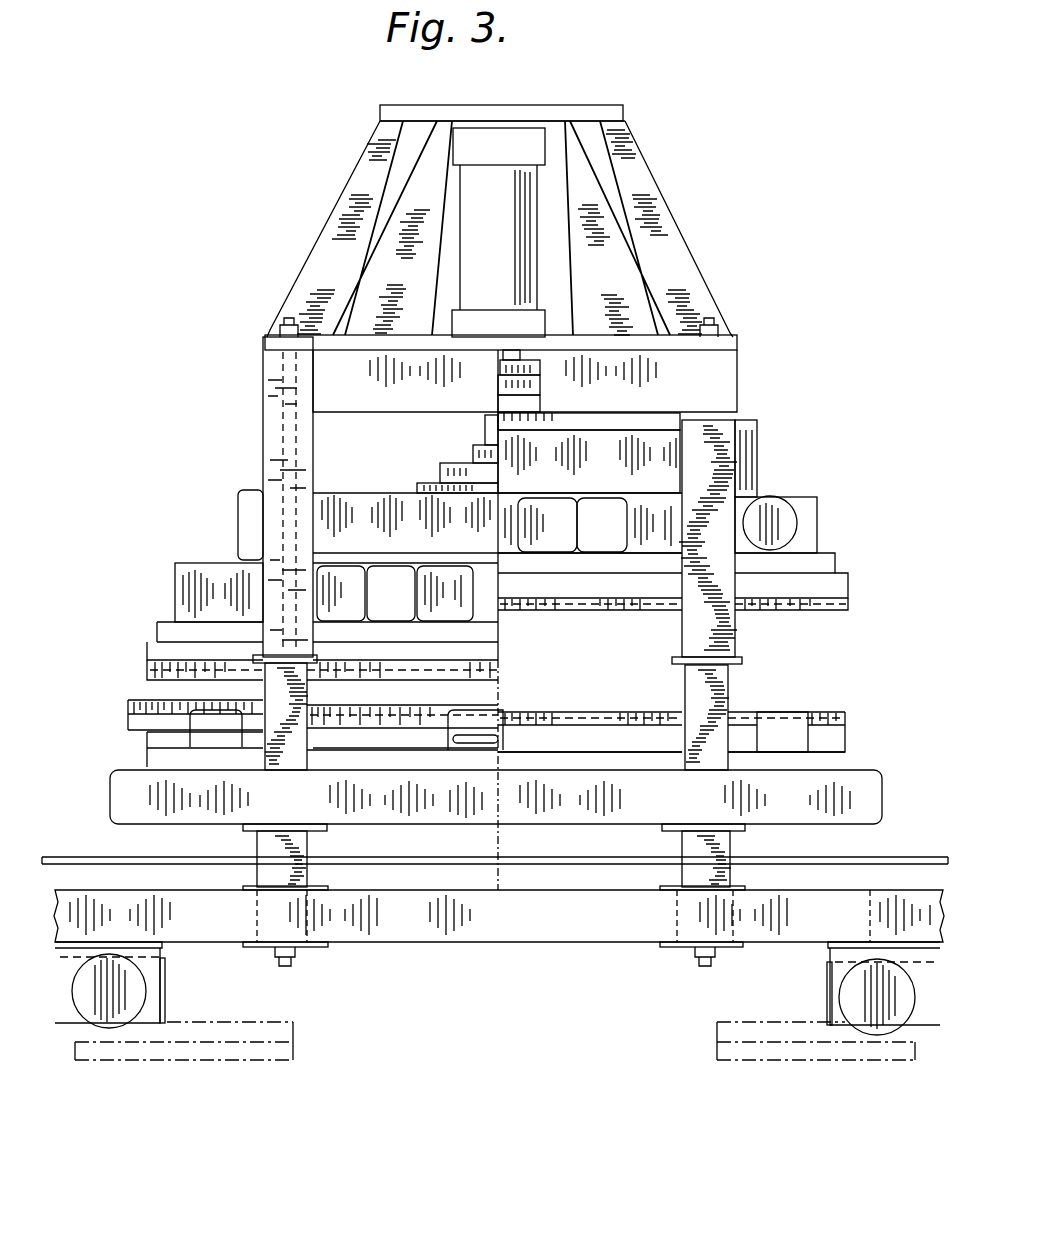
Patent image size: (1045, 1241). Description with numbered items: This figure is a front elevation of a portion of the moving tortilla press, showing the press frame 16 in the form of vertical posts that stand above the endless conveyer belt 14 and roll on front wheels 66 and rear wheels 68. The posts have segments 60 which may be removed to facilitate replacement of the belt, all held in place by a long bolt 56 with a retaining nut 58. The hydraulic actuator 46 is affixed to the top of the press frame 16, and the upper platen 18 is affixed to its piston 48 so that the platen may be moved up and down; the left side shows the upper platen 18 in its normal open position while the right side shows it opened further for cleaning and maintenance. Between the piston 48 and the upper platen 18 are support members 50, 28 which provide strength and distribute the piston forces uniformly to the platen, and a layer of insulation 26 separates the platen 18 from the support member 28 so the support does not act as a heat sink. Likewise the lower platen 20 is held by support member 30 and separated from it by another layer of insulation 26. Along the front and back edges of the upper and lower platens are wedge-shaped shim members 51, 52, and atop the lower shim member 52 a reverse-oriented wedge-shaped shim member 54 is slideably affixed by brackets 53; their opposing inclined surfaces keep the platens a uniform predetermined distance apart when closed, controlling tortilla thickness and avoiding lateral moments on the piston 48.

The endless conveyer belt 14 is at (58, 856).
The press frame 16 is at (263, 467).
The upper platen 18 is at (147, 647).
The lower platen 20 is at (147, 728).
The layer of insulation 26 is at (157, 630).
The support member 28 is at (173, 573).
The support member 30 is at (128, 810).
The hydraulic actuator 46 is at (513, 257).
The piston 48 is at (515, 357).
The support member 50 is at (238, 518).
The wedge-shaped shim member 51 is at (147, 665).
The wedge-shaped shim member 52 is at (145, 740).
The brackets 53 is at (220, 730).
The reverse-oriented wedge-shaped shim member 54 is at (128, 710).
The long bolt 56 is at (280, 437).
The retaining nut 58 is at (293, 962).
The segments 60 is at (298, 737).
The front wheels 66 is at (127, 1048).
The rear wheels 68 is at (223, 1060).